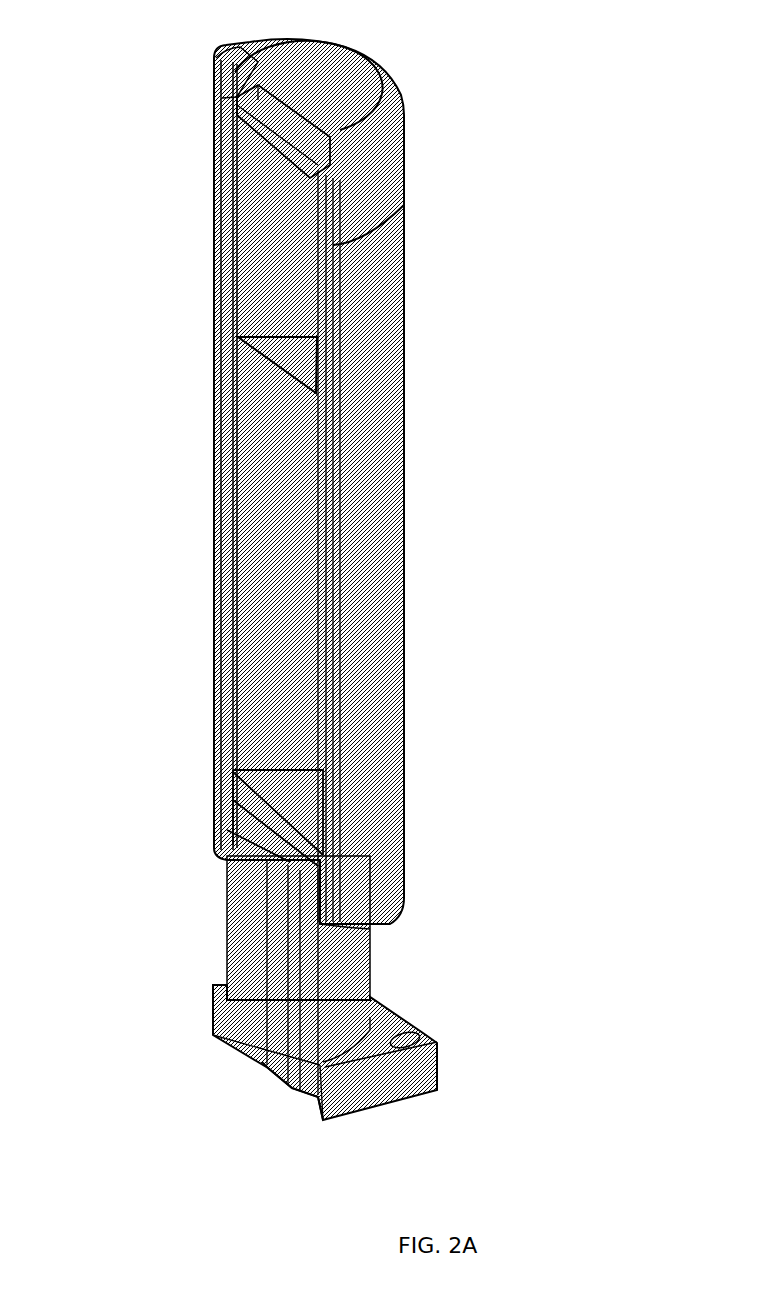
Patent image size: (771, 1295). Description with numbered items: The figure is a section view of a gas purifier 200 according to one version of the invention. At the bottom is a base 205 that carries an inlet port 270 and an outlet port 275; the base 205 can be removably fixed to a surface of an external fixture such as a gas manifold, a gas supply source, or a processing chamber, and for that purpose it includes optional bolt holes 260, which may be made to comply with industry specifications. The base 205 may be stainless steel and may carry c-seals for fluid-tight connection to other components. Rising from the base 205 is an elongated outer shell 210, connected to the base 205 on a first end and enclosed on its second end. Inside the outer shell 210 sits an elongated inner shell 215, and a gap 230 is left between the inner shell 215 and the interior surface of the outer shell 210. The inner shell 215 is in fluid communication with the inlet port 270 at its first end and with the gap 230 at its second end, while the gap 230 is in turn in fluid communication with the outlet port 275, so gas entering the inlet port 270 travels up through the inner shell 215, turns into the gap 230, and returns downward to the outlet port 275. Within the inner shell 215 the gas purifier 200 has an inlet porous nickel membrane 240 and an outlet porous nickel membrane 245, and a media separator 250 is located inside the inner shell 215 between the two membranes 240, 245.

The gas purifier 200 is at (373, 604).
The base 205 is at (343, 1068).
The elongated outer shell 210 is at (400, 318).
The elongated inner shell 215 is at (230, 563).
The gap 230 is at (228, 80).
The inlet porous nickel membrane 240 is at (287, 807).
The outlet porous nickel membrane 245 is at (282, 130).
The media separator 250 is at (265, 362).
The bolt holes 260 is at (418, 1033).
The inlet port 270 is at (266, 1090).
The outlet port 275 is at (303, 1113).